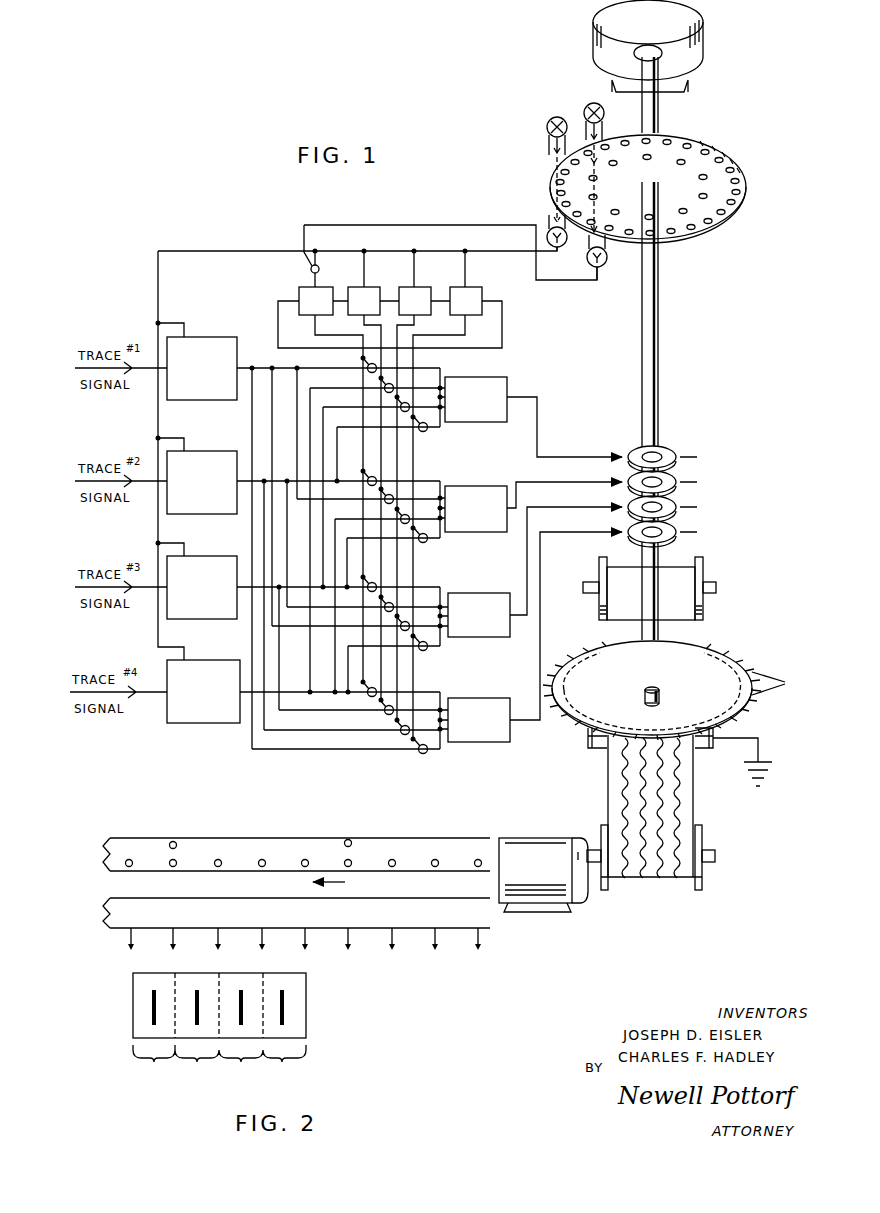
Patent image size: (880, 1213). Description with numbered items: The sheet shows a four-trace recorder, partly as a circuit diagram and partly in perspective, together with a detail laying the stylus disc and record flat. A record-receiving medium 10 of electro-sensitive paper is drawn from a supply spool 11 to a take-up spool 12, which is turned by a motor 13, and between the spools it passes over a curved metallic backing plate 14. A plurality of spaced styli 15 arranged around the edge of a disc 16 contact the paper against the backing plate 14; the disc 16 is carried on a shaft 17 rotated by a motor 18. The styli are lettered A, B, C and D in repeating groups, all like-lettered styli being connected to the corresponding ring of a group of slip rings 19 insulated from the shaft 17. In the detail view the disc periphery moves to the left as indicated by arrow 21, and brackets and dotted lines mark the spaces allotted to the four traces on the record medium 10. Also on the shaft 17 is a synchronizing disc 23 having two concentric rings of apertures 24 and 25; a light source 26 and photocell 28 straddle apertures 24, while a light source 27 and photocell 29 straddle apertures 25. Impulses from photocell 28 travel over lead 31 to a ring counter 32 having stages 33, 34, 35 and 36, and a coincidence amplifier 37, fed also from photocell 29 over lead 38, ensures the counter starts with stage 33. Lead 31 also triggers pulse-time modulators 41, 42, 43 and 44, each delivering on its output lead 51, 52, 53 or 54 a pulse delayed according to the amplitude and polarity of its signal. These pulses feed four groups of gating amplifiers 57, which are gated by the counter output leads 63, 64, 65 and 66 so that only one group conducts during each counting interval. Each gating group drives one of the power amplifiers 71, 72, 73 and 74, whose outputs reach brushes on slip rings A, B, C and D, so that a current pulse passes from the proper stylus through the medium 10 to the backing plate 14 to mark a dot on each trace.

In FIG. 1, the record-receiving medium 10 is at (608, 796).
In FIG. 2, the record-receiving medium 10 is at (303, 1009).
In FIG. 1, the supply spool 11 is at (700, 571).
In FIG. 1, the take-up spool 12 is at (705, 880).
In FIG. 1, the motor 13 is at (551, 838).
In FIG. 1, the curved metallic backing plate 14 is at (586, 741).
In FIG. 1, the styli 15 is at (779, 683).
In FIG. 2, the styli 15 is at (352, 950).
In FIG. 1, the disc 16 is at (722, 643).
In FIG. 2, the disc 16 is at (276, 940).
In FIG. 1, the shaft 17 is at (658, 320).
In FIG. 1, the motor 18 is at (703, 15).
In FIG. 1, the slip rings 19 is at (632, 450).
In FIG. 2, the arrow 21 is at (341, 883).
In FIG. 1, the synchronizing disc 23 is at (666, 196).
In FIG. 2, the synchronizing disc 23 is at (276, 854).
In FIG. 1, the apertures 24 is at (735, 200).
In FIG. 2, the apertures 24 is at (244, 881).
In FIG. 1, the apertures 25 is at (678, 208).
In FIG. 2, the apertures 25 is at (177, 841).
In FIG. 1, the light source 26 is at (546, 124).
In FIG. 1, the light source 27 is at (584, 109).
In FIG. 1, the photocell 28 is at (550, 226).
In FIG. 1, the photocell 29 is at (605, 268).
In FIG. 1, the conducting lead 31 is at (165, 283).
In FIG. 1, the ring counter 32 is at (278, 309).
In FIG. 1, the first counter stage 33 is at (326, 286).
In FIG. 1, the second counter stage 34 is at (376, 286).
In FIG. 1, the third counter stage 35 is at (428, 286).
In FIG. 1, the fourth counter stage 36 is at (478, 286).
In FIG. 1, the coincidence amplifier 37 is at (311, 270).
In FIG. 1, the lead 38 is at (418, 225).
In FIG. 1, the pulse-time modulator 41 is at (197, 336).
In FIG. 1, the pulse-time modulator 42 is at (197, 449).
In FIG. 1, the pulse-time modulator 43 is at (200, 554).
In FIG. 1, the pulse-time modulator 44 is at (200, 660).
In FIG. 1, the modulator output lead 51 is at (281, 366).
In FIG. 1, the modulator output lead 52 is at (279, 478).
In FIG. 1, the modulator output lead 53 is at (291, 584).
In FIG. 1, the modulator output lead 54 is at (287, 688).
In FIG. 1, the gating amplifiers 57 is at (366, 373).
In FIG. 1, the output lead 63 is at (311, 335).
In FIG. 1, the output lead 64 is at (360, 323).
In FIG. 1, the output lead 65 is at (420, 323).
In FIG. 1, the output lead 66 is at (468, 333).
In FIG. 1, the power amplifier 71 is at (493, 376).
In FIG. 1, the power amplifier 72 is at (477, 486).
In FIG. 1, the power amplifier 73 is at (480, 591).
In FIG. 1, the power amplifier 74 is at (478, 697).